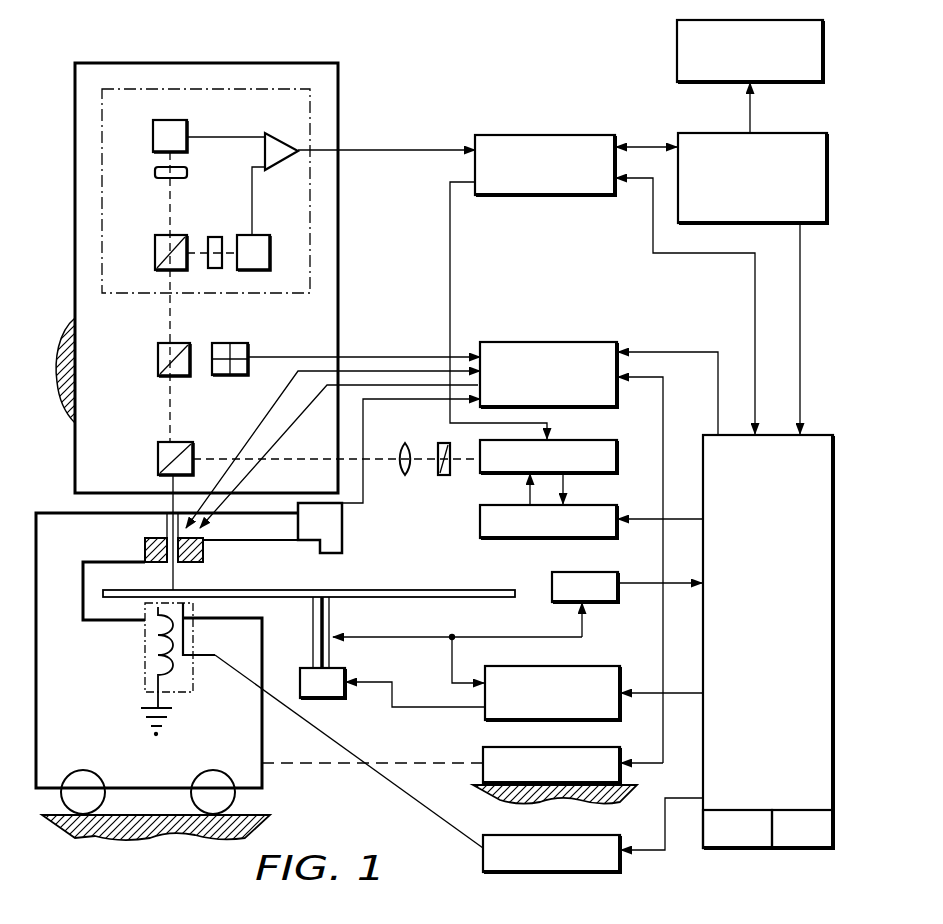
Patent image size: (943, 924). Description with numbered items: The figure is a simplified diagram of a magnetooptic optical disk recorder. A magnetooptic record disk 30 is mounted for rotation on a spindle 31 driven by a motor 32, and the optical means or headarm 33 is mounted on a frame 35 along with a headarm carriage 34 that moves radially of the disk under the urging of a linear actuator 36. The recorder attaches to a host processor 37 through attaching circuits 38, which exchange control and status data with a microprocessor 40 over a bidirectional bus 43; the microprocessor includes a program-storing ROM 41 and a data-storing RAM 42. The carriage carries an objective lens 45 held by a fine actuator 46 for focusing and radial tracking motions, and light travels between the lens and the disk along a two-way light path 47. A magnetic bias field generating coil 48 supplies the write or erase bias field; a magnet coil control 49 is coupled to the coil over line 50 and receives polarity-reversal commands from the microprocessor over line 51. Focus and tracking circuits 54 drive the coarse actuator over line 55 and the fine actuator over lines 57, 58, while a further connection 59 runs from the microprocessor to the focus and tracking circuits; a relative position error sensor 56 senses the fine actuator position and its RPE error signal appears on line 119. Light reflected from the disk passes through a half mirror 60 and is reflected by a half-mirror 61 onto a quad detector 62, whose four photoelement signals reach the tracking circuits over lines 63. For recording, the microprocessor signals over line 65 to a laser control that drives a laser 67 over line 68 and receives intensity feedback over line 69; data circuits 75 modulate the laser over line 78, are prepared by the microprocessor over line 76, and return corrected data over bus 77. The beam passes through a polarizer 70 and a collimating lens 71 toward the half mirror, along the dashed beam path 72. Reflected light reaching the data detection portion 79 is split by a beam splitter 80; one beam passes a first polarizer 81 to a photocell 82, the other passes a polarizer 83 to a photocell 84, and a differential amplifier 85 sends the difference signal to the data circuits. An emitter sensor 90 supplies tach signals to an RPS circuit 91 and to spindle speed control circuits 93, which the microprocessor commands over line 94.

The magnetooptic record disk 30 is at (462, 590).
The spindle 31 is at (313, 622).
The motor 32 is at (300, 678).
The optical means 33 is at (75, 186).
The headarm carriage 34 is at (262, 796).
The frame 35 is at (70, 352).
The linear actuator 36 is at (588, 730).
The host processor 37 is at (677, 52).
The attaching circuits 38 is at (716, 110).
The microprocessor 40 is at (783, 708).
The read-only memory (ROM) 41 is at (802, 848).
The random-access memory (RAM) 42 is at (742, 848).
The bidirectional bus 43 is at (800, 306).
The objective lens 45 is at (165, 520).
The fine actuator 46 is at (204, 548).
The two-way light path 47 is at (160, 562).
The magnetic bias field generating coil 48 is at (145, 656).
The magnet coil control 49 is at (584, 816).
The line 50 is at (382, 775).
The line 51 is at (665, 832).
The focus and tracking circuits 54 is at (604, 342).
The line 55 is at (663, 402).
The relative position error (RPE) sensor 56 is at (320, 553).
The line 57 is at (262, 420).
The line 58 is at (298, 433).
The microprocessor to focus/tracking line 59 is at (690, 352).
The half mirror 60 is at (193, 448).
The half-mirror 61 is at (184, 343).
The quad detector 62 is at (235, 343).
The lines 63 is at (405, 357).
The line 65 is at (645, 519).
The laser 67 is at (590, 440).
The line 68 is at (528, 492).
The line 69 is at (566, 486).
The polarizer 70 is at (438, 454).
The collimating lens 71 is at (400, 452).
The laser beam path 72 is at (278, 459).
The data circuits 75 is at (612, 108).
The line 76 is at (755, 300).
The bus 77 is at (646, 146).
The line 78 is at (450, 248).
The data detection portion 79 is at (229, 113).
The half-mirror or beam splitter 80 is at (155, 240).
The first polarizer 81 is at (216, 237).
The photocell 82 is at (265, 235).
The polarizer 83 is at (155, 172).
The photocell 84 is at (155, 120).
The differential amplifier 85 is at (270, 133).
The emitter sensor 90 is at (420, 637).
The RPS circuit 91 is at (590, 572).
The spindle speed control circuits 93 is at (594, 666).
The line 94 is at (648, 693).
The line 119 is at (362, 484).